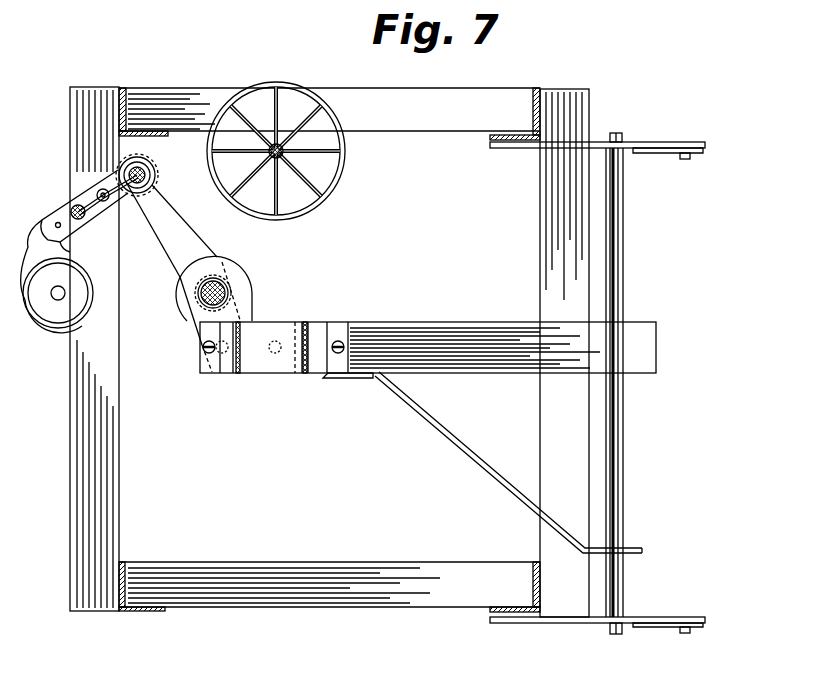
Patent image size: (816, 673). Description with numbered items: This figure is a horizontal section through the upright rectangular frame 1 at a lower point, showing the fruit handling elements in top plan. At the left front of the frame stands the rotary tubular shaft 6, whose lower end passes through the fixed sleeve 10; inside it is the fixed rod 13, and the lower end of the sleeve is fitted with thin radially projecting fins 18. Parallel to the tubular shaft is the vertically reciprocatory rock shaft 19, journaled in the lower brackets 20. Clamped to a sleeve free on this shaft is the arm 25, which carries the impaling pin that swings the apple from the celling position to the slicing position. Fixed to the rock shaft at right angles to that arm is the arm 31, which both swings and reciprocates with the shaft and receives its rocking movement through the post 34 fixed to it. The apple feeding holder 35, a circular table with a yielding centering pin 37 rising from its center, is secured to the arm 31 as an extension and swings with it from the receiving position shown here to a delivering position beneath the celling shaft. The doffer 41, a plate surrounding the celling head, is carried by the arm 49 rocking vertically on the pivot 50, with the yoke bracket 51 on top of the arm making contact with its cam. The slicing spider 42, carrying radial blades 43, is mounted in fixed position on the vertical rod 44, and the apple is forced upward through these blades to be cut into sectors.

The upright rectangular frame 1 is at (158, 612).
The tubular shaft 6 is at (203, 302).
The fixed sleeve 10 is at (225, 302).
The fixed rod 13 is at (205, 300).
The fins 18 is at (220, 291).
The rock shaft 19 is at (157, 170).
The lower brackets 20 is at (152, 152).
The arm 25 is at (187, 238).
The arm 31 is at (110, 217).
The post 34 is at (80, 218).
The apple feeding holder 35 is at (70, 278).
The centering pin 37 is at (57, 298).
The doffer 41 is at (237, 273).
The slicing spider 42 is at (295, 156).
The radial blades 43 is at (307, 193).
The vertical rod 44 is at (277, 160).
The arm 49 is at (483, 368).
The pivot 50 is at (618, 432).
The yoke bracket 51 is at (280, 365).